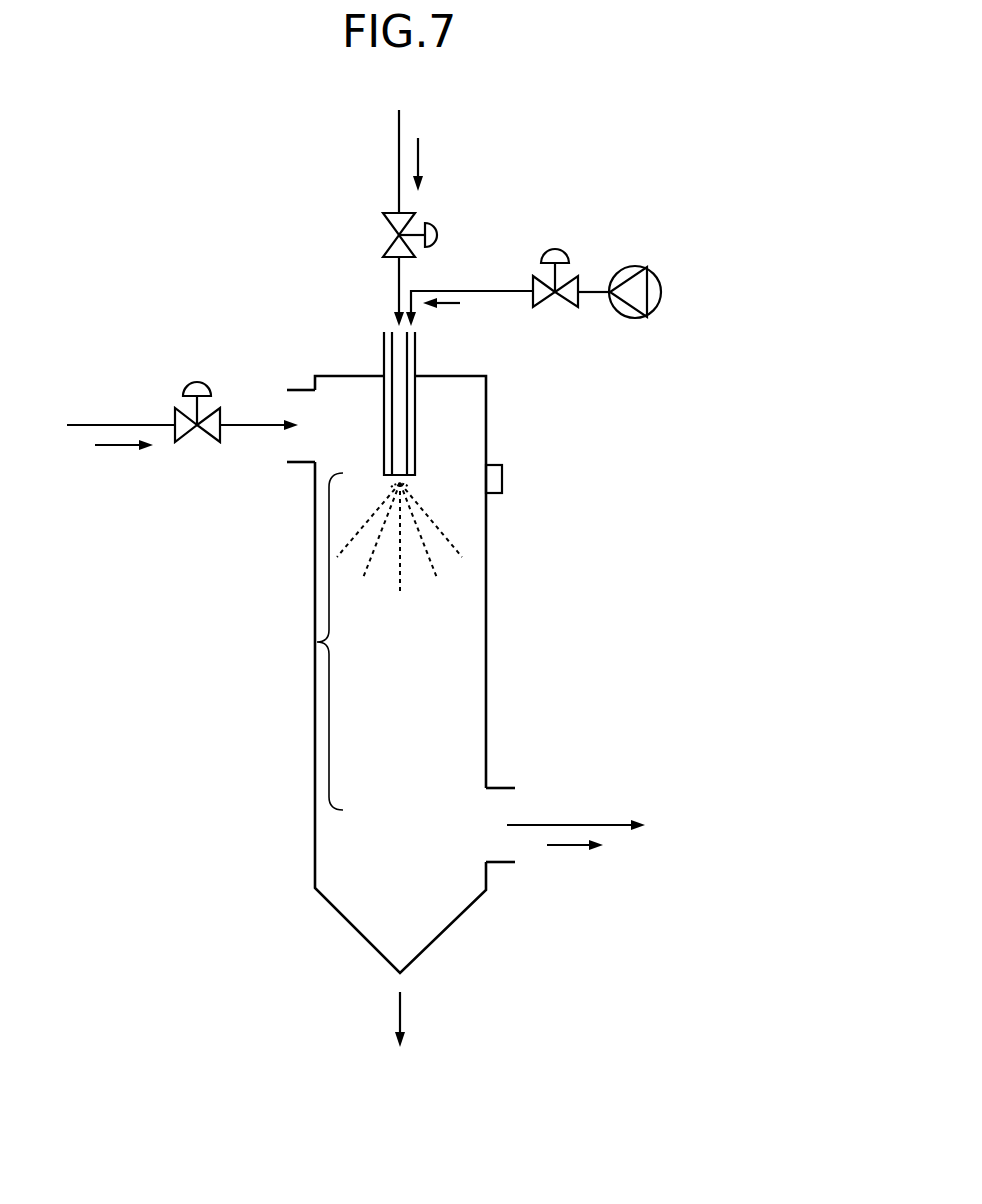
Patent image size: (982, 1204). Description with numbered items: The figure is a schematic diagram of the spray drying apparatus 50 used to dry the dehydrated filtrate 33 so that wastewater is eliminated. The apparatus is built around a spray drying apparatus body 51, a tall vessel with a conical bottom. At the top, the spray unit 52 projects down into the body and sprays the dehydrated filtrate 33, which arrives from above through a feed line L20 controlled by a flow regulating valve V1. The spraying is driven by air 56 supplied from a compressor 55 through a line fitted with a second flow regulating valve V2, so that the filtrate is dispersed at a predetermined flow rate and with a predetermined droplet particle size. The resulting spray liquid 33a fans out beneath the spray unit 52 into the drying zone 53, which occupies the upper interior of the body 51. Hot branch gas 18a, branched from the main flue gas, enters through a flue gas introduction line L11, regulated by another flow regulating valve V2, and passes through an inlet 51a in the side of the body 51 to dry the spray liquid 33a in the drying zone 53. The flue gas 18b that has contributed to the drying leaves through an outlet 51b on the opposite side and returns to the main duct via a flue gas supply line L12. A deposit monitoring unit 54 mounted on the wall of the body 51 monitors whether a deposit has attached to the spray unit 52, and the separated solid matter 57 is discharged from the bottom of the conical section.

The spray drying apparatus 50 is at (205, 171).
The spray drying apparatus body 51 is at (315, 753).
The inlet 51a is at (301, 391).
The outlet 51b is at (503, 790).
The spray unit 52 is at (408, 421).
The drying zone 53 is at (329, 642).
The deposit monitoring unit 54 is at (502, 479).
The compressor 55 is at (662, 292).
The air 56 is at (445, 311).
The separated solid matter 57 is at (400, 1010).
The dehydrated filtrate 33 is at (420, 158).
The spray liquid 33a is at (352, 540).
The branch gas 18a is at (118, 450).
The flue gas 18b is at (570, 850).
The flow regulating valve V1 is at (440, 236).
The flow regulating valve V2 is at (555, 250).
The flue gas introduction line L11 is at (105, 425).
The flue gas supply line L12 is at (580, 825).
The supply line L20 is at (399, 157).